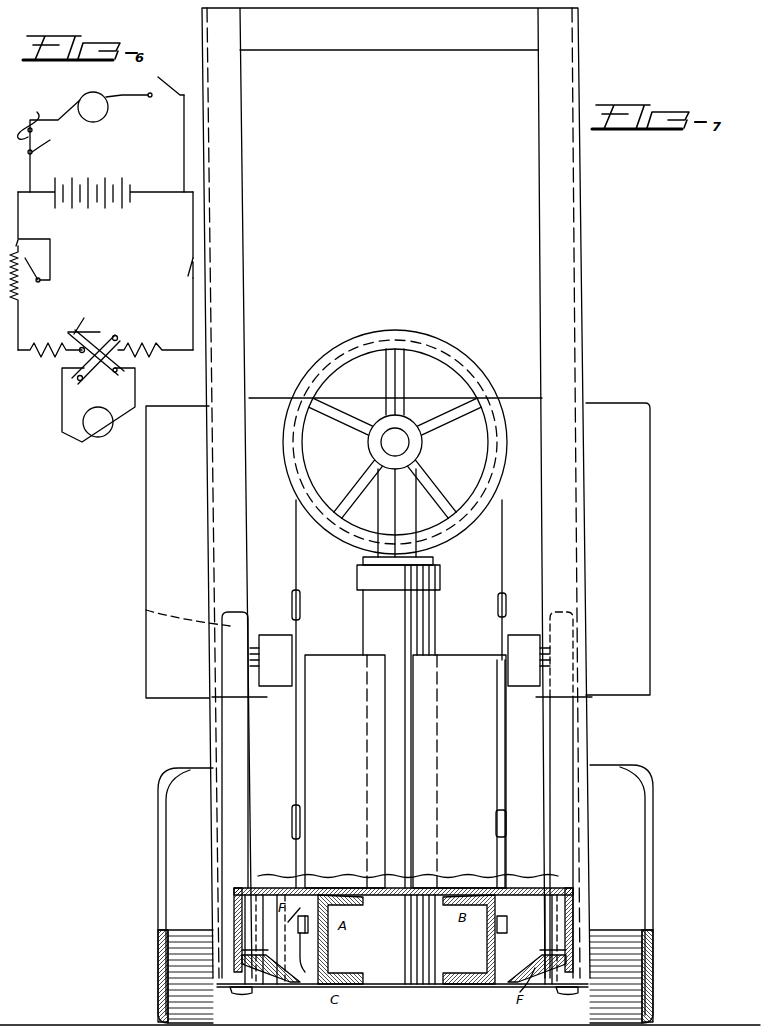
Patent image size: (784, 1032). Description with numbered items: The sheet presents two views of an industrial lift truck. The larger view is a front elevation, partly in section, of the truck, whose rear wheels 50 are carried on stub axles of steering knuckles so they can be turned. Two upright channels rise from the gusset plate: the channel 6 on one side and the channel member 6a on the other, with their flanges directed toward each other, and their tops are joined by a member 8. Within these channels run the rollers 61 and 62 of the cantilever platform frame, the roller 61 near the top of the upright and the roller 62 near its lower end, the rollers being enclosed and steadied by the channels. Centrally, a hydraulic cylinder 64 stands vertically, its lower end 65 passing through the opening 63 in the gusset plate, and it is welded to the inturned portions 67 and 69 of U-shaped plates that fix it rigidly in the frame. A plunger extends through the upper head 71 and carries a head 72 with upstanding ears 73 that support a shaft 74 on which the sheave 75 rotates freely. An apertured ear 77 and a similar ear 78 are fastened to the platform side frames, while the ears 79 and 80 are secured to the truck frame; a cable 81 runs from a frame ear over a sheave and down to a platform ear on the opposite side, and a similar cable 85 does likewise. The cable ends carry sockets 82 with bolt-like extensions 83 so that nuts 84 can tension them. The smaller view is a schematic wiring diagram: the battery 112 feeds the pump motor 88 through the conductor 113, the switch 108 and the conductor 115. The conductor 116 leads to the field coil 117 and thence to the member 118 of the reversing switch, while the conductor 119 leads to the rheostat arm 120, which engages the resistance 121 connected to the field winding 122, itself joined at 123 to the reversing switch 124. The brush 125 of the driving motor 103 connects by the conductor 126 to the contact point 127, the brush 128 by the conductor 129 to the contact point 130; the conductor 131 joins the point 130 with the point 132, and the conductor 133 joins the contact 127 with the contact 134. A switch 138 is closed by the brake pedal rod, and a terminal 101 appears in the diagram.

In FIG. 7, the channel web 6 is at (578, 297).
In FIG. 7, the channel member 6a is at (235, 447).
In FIG. 7, the joining member 8 is at (420, 42).
In FIG. 7, the rear wheel 50 is at (165, 900).
In FIG. 7, the roller 61 is at (228, 630).
In FIG. 7, the roller 62 is at (246, 990).
In FIG. 7, the opening 63 is at (396, 984).
In FIG. 7, the hydraulic cylinder 64 is at (425, 627).
In FIG. 7, the lower end of cylinder 65 is at (412, 975).
In FIG. 7, the plate portion 67 is at (330, 668).
In FIG. 7, the plate portion 69 is at (459, 771).
In FIG. 7, the upper head 71 is at (440, 580).
In FIG. 7, the head 72 is at (363, 561).
In FIG. 7, the upstanding ears 73 is at (412, 490).
In FIG. 7, the shaft 74 is at (398, 438).
In FIG. 7, the sheave 75 is at (525, 372).
In FIG. 7, the apertured ear 77 is at (508, 922).
In FIG. 7, the ear 78 is at (298, 960).
In FIG. 7, the ear 79 is at (497, 668).
In FIG. 7, the ear 80 is at (298, 660).
In FIG. 7, the cable 81 is at (294, 530).
In FIG. 7, the socket 82 is at (508, 596).
In FIG. 7, the bolt-like extension 83 is at (500, 626).
In FIG. 7, the nut 84 is at (291, 944).
In FIG. 7, the cable 85 is at (500, 783).
In FIG. 6, the pump motor 88 is at (96, 95).
In FIG. 6, the terminal 101 is at (21, 146).
In FIG. 6, the driving motor 103 is at (96, 438).
In FIG. 6, the switch 108 is at (172, 78).
In FIG. 6, the battery 112 is at (105, 184).
In FIG. 6, the conductor 113 is at (51, 138).
In FIG. 6, the conductor 115 is at (145, 97).
In FIG. 6, the conductor 116 is at (190, 237).
In FIG. 6, the field coil 117 is at (183, 138).
In FIG. 6, the reversing switch member 118 is at (155, 340).
In FIG. 6, the conductor 119 is at (25, 226).
In FIG. 6, the rheostat arm 120 is at (42, 282).
In FIG. 6, the resistance 121 is at (20, 295).
In FIG. 6, the field winding 122 is at (30, 358).
In FIG. 6, the connection point 123 is at (78, 378).
In FIG. 6, the reversing switch 124 is at (82, 314).
In FIG. 6, the brush 125 is at (130, 420).
In FIG. 6, the conductor 126 is at (136, 386).
In FIG. 6, the contact point 127 is at (118, 370).
In FIG. 6, the brush 128 is at (70, 436).
In FIG. 6, the conductor 129 is at (62, 404).
In FIG. 6, the contact point 130 is at (84, 370).
In FIG. 6, the conductor 131 is at (100, 380).
In FIG. 6, the contact point 132 is at (113, 340).
In FIG. 6, the conductor 133 is at (108, 328).
In FIG. 6, the contact 134 is at (68, 334).
In FIG. 6, the switch 138 is at (185, 268).